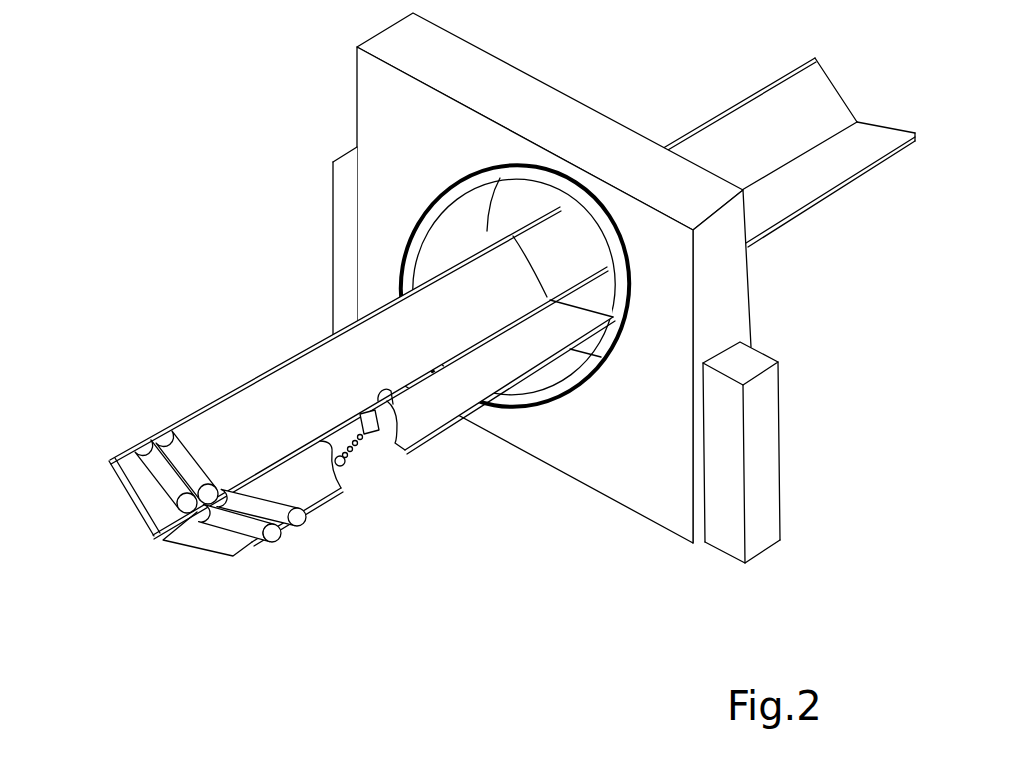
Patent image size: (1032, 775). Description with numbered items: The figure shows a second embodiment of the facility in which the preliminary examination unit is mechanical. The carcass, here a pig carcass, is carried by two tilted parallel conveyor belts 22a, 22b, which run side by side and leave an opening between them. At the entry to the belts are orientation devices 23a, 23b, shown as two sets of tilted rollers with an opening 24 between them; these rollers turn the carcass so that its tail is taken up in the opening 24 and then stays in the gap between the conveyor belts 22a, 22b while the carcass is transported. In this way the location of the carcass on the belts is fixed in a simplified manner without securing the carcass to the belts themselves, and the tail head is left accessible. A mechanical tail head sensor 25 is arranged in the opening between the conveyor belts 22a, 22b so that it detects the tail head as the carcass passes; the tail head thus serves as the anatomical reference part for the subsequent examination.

The tilted parallel conveyor belt 22a is at (360, 373).
The tilted parallel conveyor belt 22b is at (305, 477).
The orientation device 23a is at (142, 489).
The orientation device 23b is at (221, 556).
The opening 24 is at (150, 541).
The mechanical tail head sensor 25 is at (414, 458).